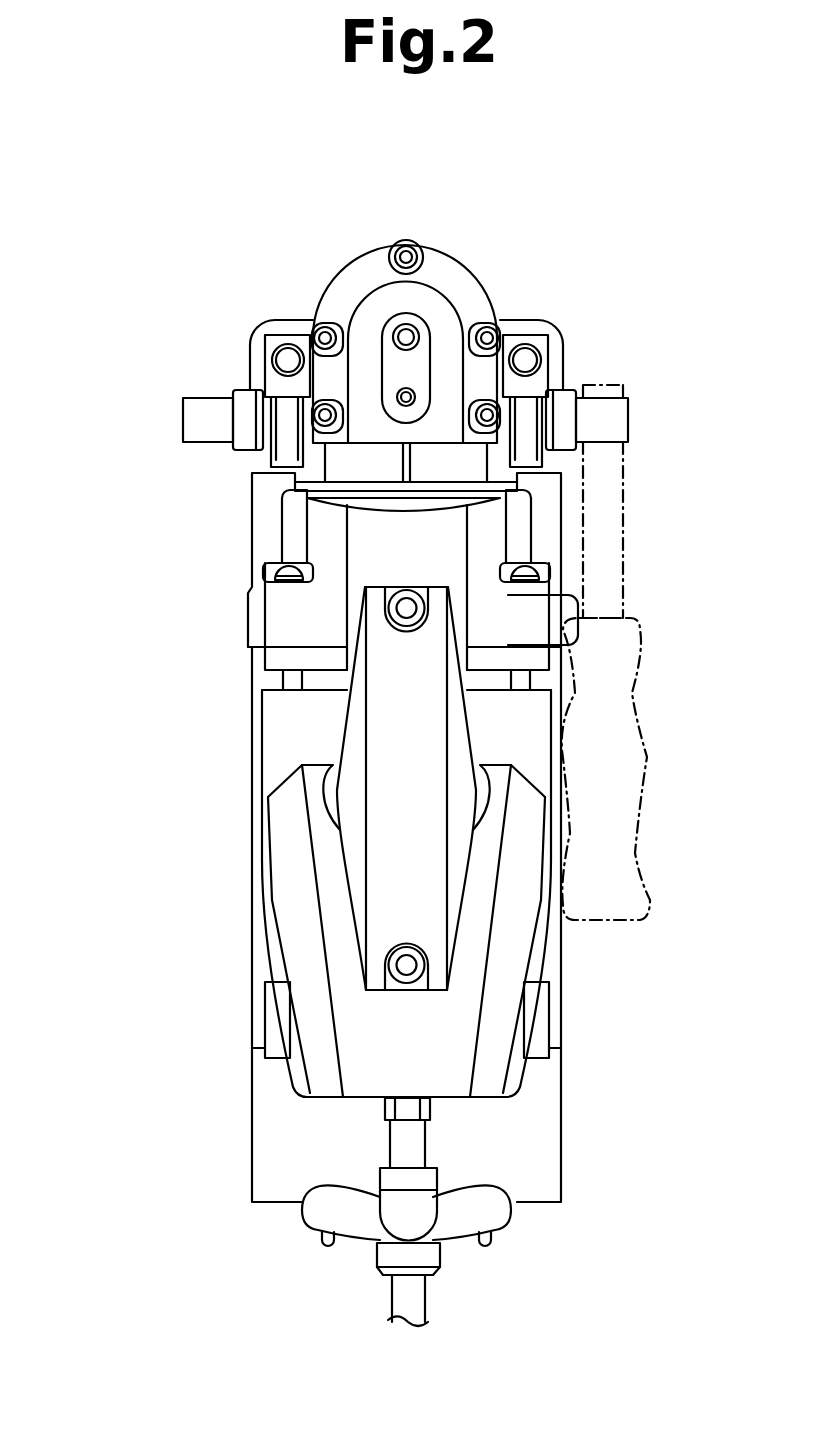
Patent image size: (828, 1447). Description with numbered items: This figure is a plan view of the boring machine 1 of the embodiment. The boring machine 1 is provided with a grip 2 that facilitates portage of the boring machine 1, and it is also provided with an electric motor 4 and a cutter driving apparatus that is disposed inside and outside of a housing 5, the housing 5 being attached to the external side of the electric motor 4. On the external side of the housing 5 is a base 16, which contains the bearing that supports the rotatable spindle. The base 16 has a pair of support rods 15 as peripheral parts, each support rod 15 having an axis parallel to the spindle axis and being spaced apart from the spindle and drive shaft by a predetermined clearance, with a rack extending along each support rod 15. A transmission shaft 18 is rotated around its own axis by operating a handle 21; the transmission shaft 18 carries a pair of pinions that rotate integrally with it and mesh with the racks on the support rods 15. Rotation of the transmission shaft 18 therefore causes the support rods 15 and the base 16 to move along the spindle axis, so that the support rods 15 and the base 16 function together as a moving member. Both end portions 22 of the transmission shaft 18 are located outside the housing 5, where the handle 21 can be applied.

The boring machine 1 is at (98, 215).
The grip 2 is at (437, 722).
The electric motor 4 is at (275, 737).
The housing 5 is at (370, 248).
The support rod 15 is at (289, 352).
The base 16 is at (252, 374).
The transmission shaft 18 is at (247, 443).
The handle 21 is at (647, 743).
The end portion 22 is at (188, 425).